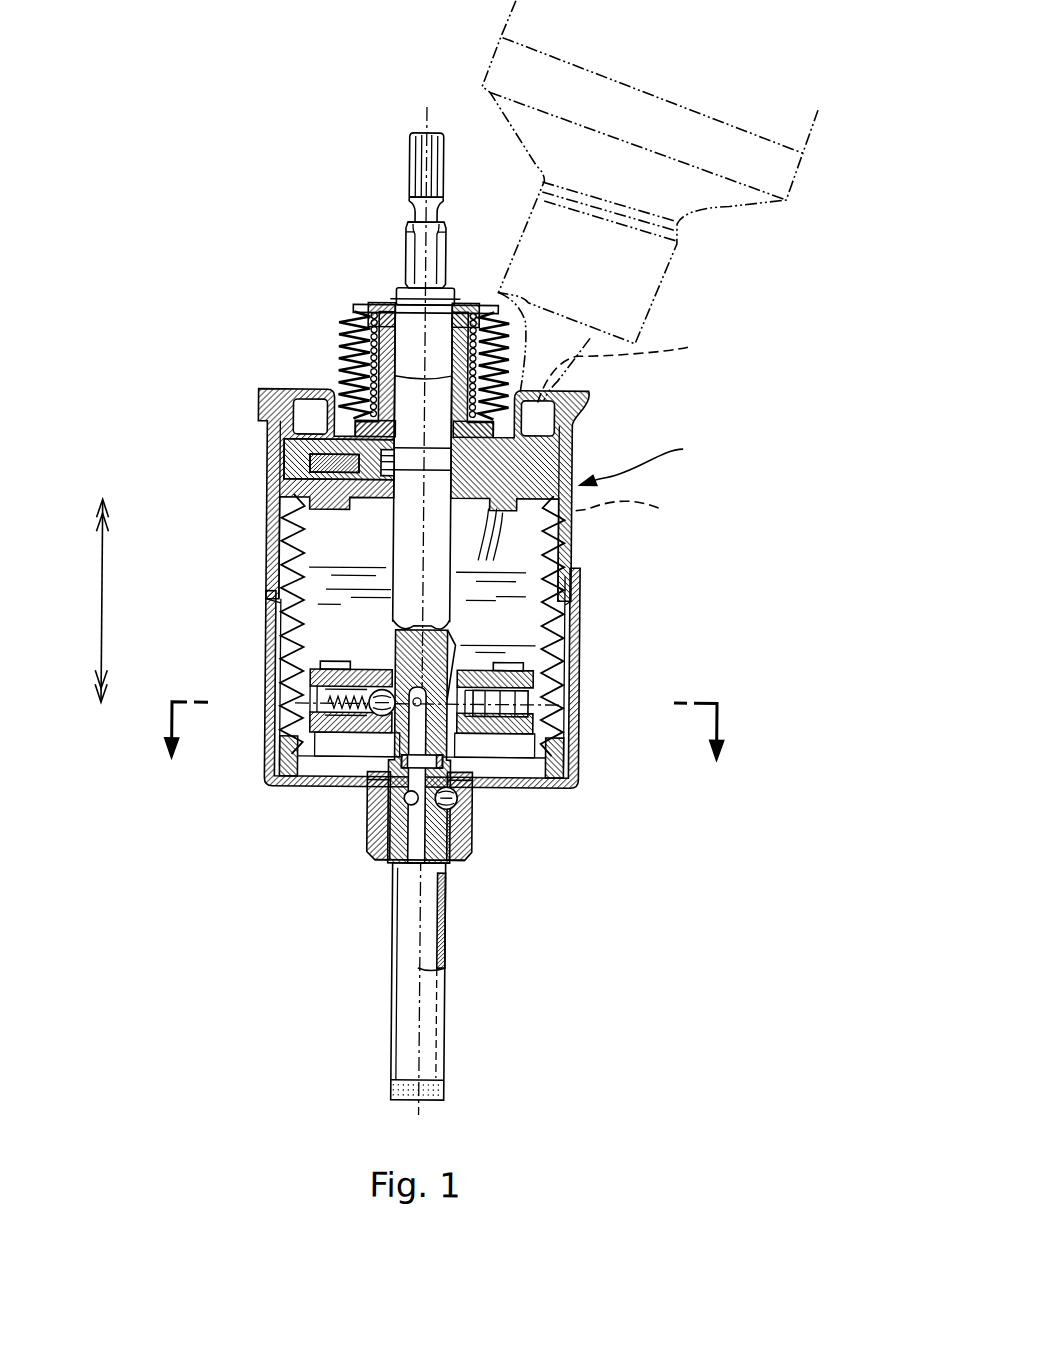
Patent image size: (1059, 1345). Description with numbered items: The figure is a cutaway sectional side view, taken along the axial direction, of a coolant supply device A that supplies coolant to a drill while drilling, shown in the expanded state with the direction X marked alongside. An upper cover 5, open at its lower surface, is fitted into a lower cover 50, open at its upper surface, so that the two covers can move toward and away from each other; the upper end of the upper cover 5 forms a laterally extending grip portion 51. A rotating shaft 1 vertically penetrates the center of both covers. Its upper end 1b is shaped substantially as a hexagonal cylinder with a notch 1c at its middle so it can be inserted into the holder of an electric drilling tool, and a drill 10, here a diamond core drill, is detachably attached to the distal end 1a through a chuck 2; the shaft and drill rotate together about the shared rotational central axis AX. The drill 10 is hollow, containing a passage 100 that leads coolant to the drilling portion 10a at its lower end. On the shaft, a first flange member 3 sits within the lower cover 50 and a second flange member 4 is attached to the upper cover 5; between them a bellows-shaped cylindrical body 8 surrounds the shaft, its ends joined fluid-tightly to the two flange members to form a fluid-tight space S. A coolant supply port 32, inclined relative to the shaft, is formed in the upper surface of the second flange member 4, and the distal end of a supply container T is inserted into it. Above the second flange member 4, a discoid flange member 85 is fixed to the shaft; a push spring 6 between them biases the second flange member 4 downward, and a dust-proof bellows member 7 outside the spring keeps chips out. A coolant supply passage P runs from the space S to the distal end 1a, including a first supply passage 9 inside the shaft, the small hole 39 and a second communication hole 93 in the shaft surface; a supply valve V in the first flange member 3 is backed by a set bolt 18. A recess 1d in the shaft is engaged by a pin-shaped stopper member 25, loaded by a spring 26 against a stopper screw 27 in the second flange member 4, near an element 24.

The rotating shaft 1 is at (401, 545).
The distal end 1a is at (462, 775).
The upper end 1b is at (410, 160).
The notch 1c is at (416, 213).
The recess 1d is at (440, 466).
The chuck 2 is at (375, 816).
The first flange member 3 is at (375, 665).
The second flange member 4 is at (295, 498).
The upper cover 5 is at (285, 568).
The push spring 6 is at (368, 358).
The dust-proof bellows member 7 is at (352, 322).
The bellows-shaped cylindrical body 8 is at (298, 700).
The first supply passage 9 is at (420, 734).
The drill 10 is at (446, 1035).
The drilling portion 10a is at (400, 1087).
The set bolt 18 is at (538, 703).
The seal 24 is at (315, 460).
The stopper member 25 is at (363, 482).
The spring 26 is at (292, 420).
The stopper screw 27 is at (295, 445).
The coolant supply port 32 is at (626, 423).
The small hole 39 is at (470, 768).
The lower cover 50 is at (283, 740).
The grip portion 51 is at (590, 400).
The flange member 85 is at (390, 313).
The second communication hole 93 is at (502, 634).
The passage 100 is at (436, 925).
The coolant supply device A is at (641, 459).
The coolant supply passage P is at (397, 742).
The fluid-tight space S is at (522, 650).
The supply container T is at (493, 53).
The supply valve V is at (645, 706).
The axial direction X is at (107, 602).
The rotational central axis AX is at (420, 995).